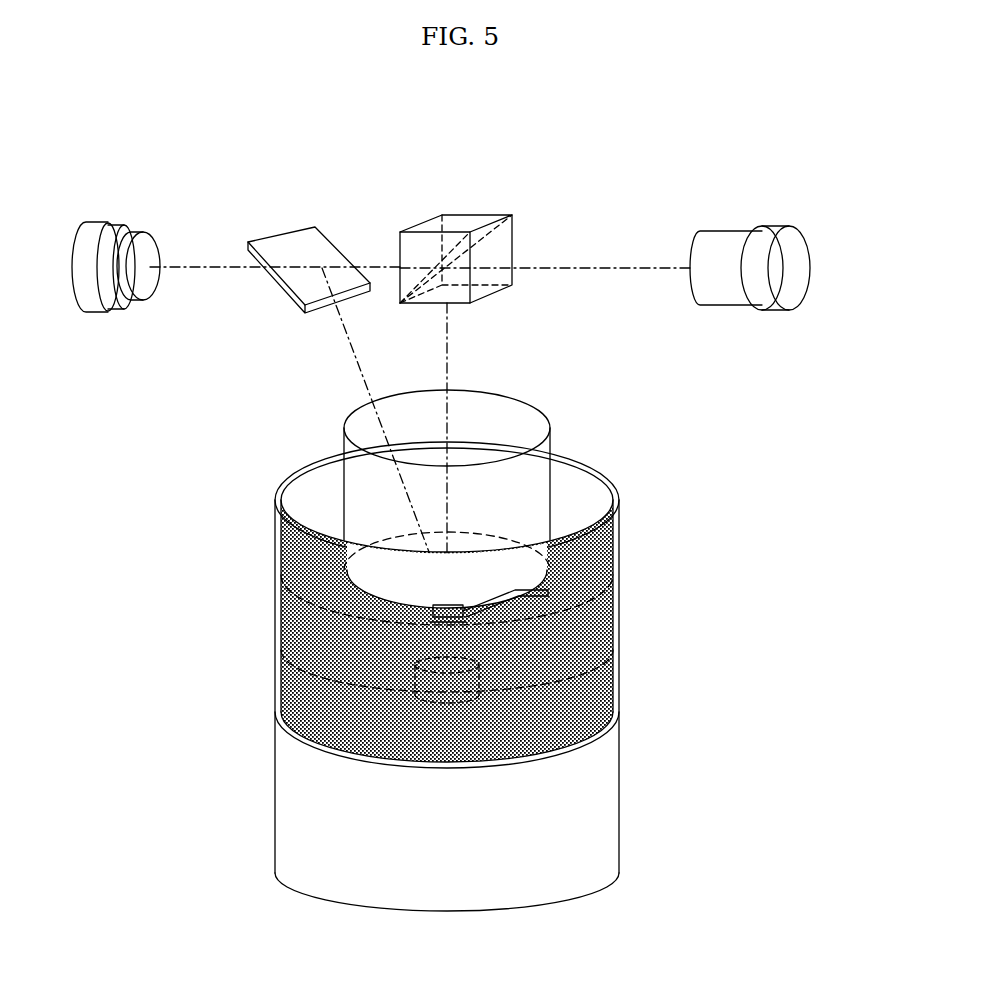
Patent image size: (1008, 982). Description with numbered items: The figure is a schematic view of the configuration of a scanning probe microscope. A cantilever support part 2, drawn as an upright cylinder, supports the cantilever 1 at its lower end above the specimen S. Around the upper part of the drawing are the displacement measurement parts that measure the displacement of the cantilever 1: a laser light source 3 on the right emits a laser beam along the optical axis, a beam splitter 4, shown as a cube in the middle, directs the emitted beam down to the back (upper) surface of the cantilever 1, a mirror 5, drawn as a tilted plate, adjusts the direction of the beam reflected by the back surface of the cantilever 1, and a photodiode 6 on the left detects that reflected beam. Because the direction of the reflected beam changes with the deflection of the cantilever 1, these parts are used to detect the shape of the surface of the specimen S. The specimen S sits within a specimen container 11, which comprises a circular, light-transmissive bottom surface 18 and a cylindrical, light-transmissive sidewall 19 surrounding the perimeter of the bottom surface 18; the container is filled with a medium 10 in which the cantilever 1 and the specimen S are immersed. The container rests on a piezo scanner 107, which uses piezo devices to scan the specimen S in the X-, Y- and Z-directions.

The cantilever 1 is at (548, 592).
The cantilever support part 2 is at (505, 423).
The laser light source 3 is at (763, 247).
The beam splitter 4 is at (487, 196).
The mirror 5 is at (293, 243).
The photodiode 6 is at (125, 243).
The medium 10 is at (300, 617).
The specimen container 11 is at (621, 575).
The bottom surface 18 is at (290, 718).
The sidewall 19 is at (276, 654).
The piezo scanner 107 is at (300, 800).
The specimen S is at (470, 694).